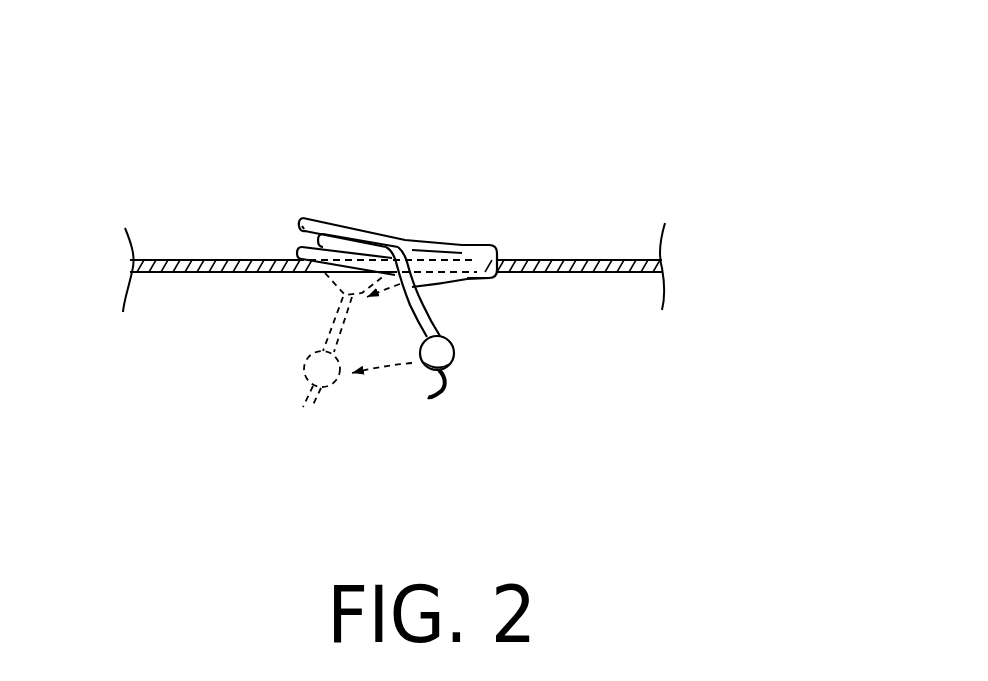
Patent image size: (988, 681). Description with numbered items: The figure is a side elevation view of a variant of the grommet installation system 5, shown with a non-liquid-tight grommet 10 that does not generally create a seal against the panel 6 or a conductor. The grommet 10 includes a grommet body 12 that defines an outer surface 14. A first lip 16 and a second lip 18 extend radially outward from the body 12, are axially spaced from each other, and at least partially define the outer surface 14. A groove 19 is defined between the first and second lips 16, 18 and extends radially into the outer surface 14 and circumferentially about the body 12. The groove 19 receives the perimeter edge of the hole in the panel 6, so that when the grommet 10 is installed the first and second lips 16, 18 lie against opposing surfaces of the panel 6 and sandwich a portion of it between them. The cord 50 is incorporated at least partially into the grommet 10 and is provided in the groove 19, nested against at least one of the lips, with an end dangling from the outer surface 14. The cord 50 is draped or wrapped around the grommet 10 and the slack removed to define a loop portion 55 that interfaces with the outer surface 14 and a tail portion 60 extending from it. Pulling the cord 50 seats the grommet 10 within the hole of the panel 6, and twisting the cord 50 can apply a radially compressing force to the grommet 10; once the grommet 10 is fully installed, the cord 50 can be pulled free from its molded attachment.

The grommet installation system 5 is at (582, 117).
The panel 6 is at (192, 273).
The grommet 10 is at (462, 155).
The grommet body 12 is at (368, 228).
The outer surface 14 is at (305, 217).
The first lip 16 is at (417, 287).
The second lip 18 is at (465, 242).
The groove 19 is at (300, 230).
The cord 50 is at (610, 383).
The loop portion 55 is at (342, 238).
The tail portion 60 is at (450, 334).